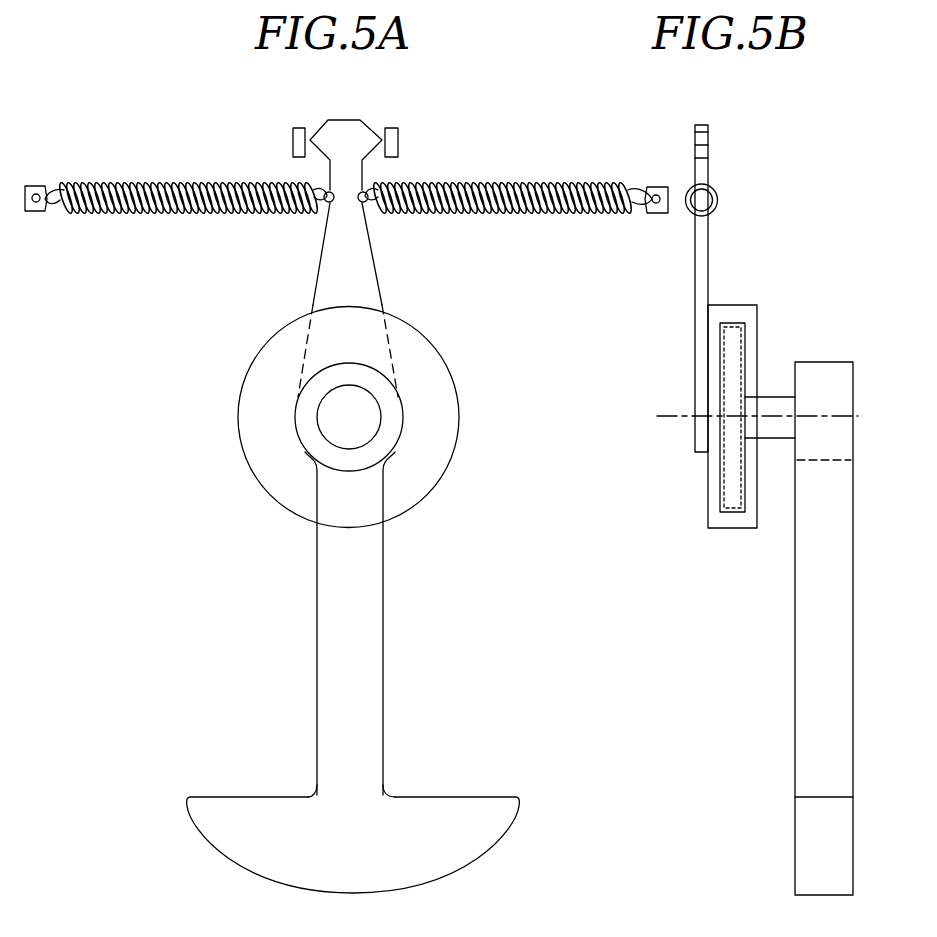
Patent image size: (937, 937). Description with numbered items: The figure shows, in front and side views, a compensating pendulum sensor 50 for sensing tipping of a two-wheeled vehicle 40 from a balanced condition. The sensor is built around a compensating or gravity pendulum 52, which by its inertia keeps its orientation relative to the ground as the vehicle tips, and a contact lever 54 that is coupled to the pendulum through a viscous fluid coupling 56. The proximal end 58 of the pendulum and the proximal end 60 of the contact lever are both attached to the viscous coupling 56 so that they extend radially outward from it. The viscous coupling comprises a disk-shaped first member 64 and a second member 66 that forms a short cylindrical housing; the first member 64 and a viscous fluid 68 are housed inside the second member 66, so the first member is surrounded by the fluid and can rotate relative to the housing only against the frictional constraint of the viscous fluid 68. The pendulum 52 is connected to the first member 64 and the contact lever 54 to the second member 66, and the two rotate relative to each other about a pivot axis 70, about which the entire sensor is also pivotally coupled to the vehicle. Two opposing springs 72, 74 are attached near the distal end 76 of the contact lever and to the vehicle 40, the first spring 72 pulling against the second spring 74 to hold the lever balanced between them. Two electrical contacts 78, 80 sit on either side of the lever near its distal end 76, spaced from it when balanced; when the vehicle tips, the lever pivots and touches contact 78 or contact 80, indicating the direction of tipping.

In FIG. 5A, the two-wheeled vehicle 40 is at (62, 169).
In FIG. 5A, the compensating pendulum sensor 50 is at (250, 700).
In FIG. 5A, the compensating pendulum 52 is at (397, 797).
In FIG. 5B, the compensating pendulum 52 is at (820, 750).
In FIG. 5A, the contact lever 54 is at (360, 278).
In FIG. 5B, the contact lever 54 is at (708, 245).
In FIG. 5A, the viscous fluid coupling 56 is at (460, 412).
In FIG. 5A, the proximal end of pendulum 58 is at (370, 470).
In FIG. 5B, the proximal end of pendulum 58 is at (817, 388).
In FIG. 5A, the proximal end of contact lever 60 is at (372, 367).
In FIG. 5B, the proximal end of contact lever 60 is at (693, 440).
In FIG. 5B, the first member 64 is at (733, 330).
In FIG. 5B, the second member 66 is at (752, 328).
In FIG. 5B, the viscous fluid 68 is at (735, 512).
In FIG. 5B, the pivot axis 70 is at (668, 416).
In FIG. 5A, the first spring 72 is at (165, 186).
In FIG. 5A, the second spring 74 is at (478, 186).
In FIG. 5A, the distal end of contact lever 76 is at (352, 120).
In FIG. 5A, the first electrical contact 78 is at (297, 128).
In FIG. 5A, the second electrical contact 80 is at (390, 128).